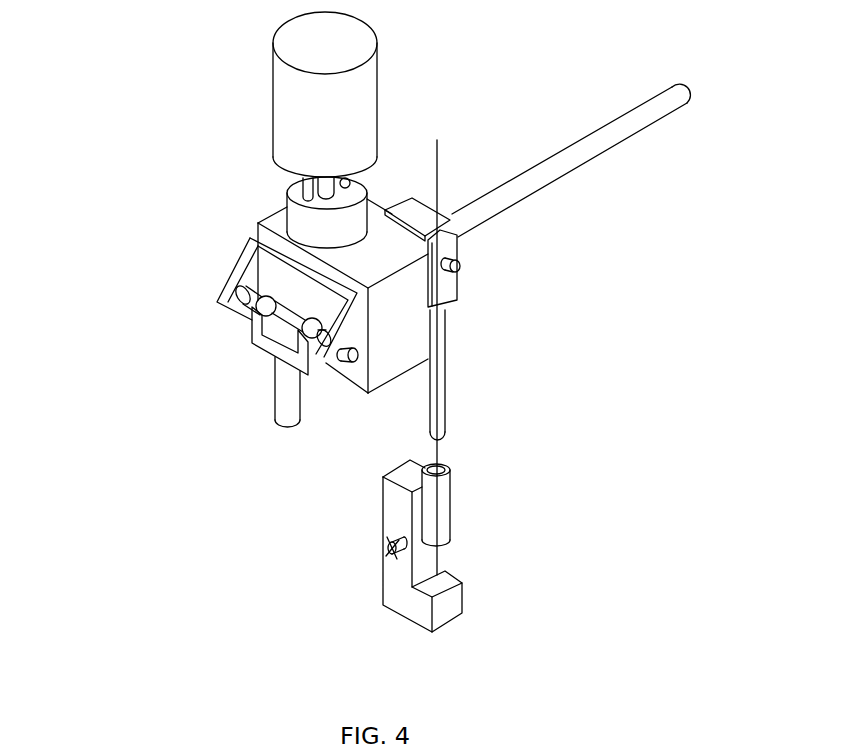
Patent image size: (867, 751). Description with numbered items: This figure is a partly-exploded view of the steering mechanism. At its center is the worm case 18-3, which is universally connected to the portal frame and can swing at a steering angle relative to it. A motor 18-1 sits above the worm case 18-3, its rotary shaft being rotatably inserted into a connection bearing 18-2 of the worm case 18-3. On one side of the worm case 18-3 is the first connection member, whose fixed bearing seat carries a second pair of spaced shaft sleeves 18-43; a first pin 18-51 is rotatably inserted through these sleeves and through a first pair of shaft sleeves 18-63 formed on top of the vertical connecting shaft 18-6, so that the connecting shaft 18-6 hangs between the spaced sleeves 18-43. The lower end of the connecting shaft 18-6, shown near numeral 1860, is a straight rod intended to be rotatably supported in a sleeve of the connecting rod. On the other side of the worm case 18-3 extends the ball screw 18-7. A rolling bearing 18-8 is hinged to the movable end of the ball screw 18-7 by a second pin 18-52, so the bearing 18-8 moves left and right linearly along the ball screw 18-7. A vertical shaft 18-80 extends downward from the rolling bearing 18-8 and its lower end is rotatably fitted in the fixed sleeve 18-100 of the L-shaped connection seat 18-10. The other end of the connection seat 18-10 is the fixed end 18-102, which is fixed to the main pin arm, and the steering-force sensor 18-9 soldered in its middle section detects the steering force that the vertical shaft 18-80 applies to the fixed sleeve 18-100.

The motor 18-1 is at (327, 52).
The connection bearing 18-2 is at (312, 232).
The worm case 18-3 is at (277, 225).
The second pair of spaced shaft sleeves 18-43 is at (345, 313).
The first pair of shaft sleeves 18-63 is at (312, 340).
The vertical connecting shaft 18-6 is at (277, 387).
The tube end 1860 is at (286, 418).
The first pin 18-51 is at (350, 358).
The ball screw 18-7 is at (476, 203).
The rolling bearing 18-8 is at (457, 262).
The second pin 18-52 is at (457, 270).
The vertical shaft 18-80 is at (447, 390).
The connection seat 18-10 is at (506, 560).
The fixed sleeve 18-100 is at (442, 512).
The fixed end 18-102 is at (450, 603).
The steering-force sensor 18-9 is at (387, 553).